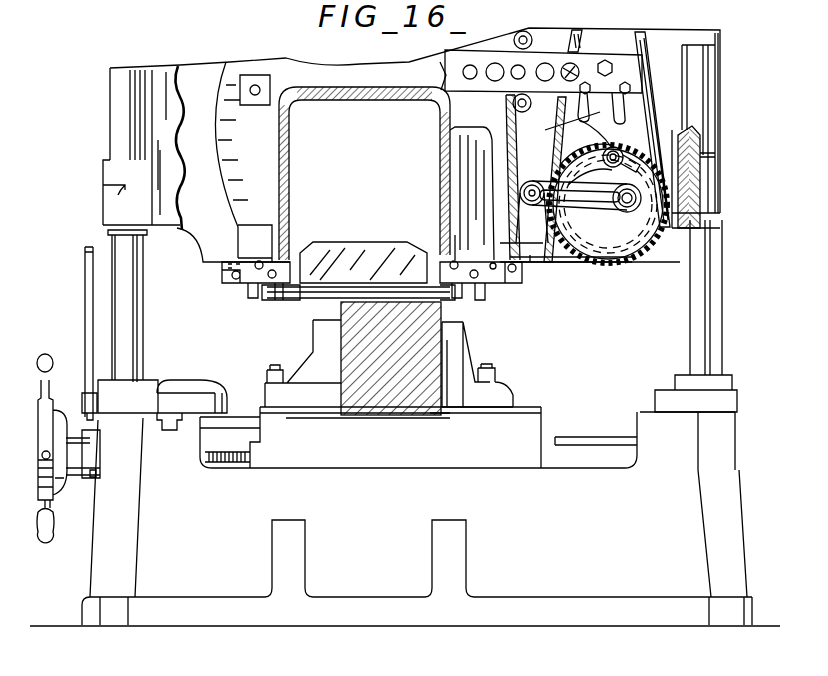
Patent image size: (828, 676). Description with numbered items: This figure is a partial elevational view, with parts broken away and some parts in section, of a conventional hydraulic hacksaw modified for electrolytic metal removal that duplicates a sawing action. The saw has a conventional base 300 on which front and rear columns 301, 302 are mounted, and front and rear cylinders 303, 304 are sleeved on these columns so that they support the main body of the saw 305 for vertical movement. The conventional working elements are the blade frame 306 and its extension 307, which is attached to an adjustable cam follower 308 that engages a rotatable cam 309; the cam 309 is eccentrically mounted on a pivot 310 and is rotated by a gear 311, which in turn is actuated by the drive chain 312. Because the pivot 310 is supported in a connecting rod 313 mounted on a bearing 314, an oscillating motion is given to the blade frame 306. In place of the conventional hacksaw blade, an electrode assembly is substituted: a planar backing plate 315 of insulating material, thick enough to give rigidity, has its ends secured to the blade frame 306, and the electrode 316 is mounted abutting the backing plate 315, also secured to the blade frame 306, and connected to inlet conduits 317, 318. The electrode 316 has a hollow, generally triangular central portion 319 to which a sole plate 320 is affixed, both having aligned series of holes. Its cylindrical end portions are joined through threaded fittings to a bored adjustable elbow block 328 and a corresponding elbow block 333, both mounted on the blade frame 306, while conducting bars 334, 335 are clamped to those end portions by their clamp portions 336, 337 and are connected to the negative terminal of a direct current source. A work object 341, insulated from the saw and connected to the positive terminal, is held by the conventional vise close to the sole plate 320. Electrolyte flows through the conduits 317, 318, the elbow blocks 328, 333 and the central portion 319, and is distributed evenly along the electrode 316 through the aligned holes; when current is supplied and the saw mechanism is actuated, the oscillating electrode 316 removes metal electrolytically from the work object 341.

The base 300 is at (408, 608).
The front column 301 is at (127, 302).
The rear column 302 is at (700, 336).
The front cylinder 303 is at (117, 202).
The rear cylinder 304 is at (720, 186).
The main body of the saw 305 is at (168, 76).
The blade frame 306 is at (257, 67).
The extension 307 is at (594, 52).
The adjustable cam follower 308 is at (623, 148).
The rotatable cam 309 is at (540, 146).
The pivot 310 is at (628, 212).
The gear 311 is at (560, 152).
The drive chain 312 is at (640, 110).
The connecting rod 313 is at (579, 212).
The bearing 314 is at (553, 206).
The backing plate 315 is at (364, 244).
The electrode 316 is at (319, 303).
The inlet conduit 317 is at (260, 298).
The inlet conduit 318 is at (468, 297).
The central portion 319 is at (355, 276).
The sole plate 320 is at (331, 302).
The adjustable elbow block 328 is at (246, 262).
The elbow block 333 is at (472, 270).
The conducting bar 334 is at (226, 283).
The conducting bar 335 is at (496, 292).
The clamp portion 336 is at (292, 252).
The clamp portion 337 is at (447, 257).
The work object 341 is at (391, 385).